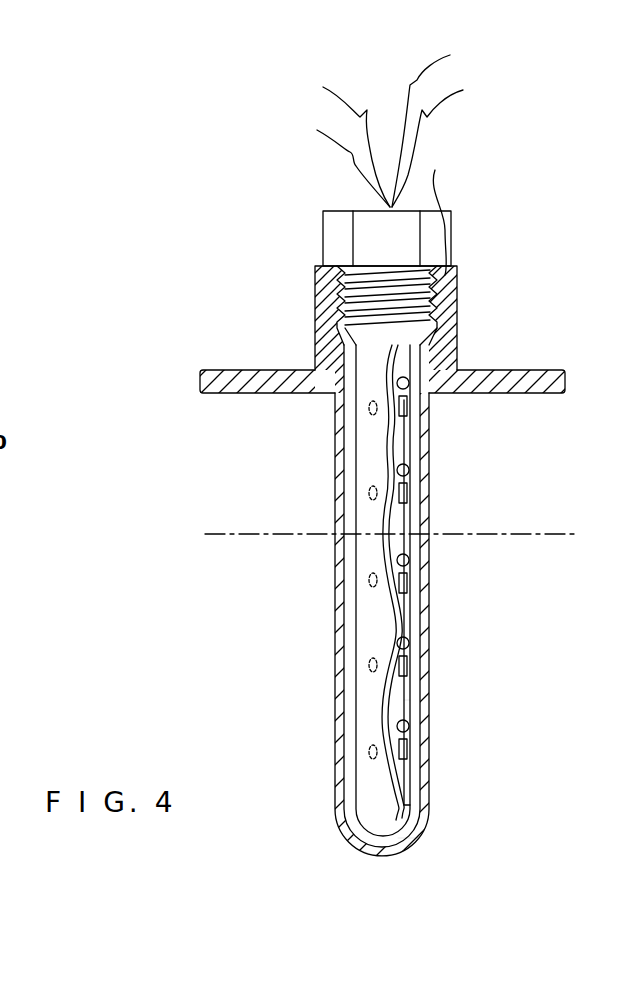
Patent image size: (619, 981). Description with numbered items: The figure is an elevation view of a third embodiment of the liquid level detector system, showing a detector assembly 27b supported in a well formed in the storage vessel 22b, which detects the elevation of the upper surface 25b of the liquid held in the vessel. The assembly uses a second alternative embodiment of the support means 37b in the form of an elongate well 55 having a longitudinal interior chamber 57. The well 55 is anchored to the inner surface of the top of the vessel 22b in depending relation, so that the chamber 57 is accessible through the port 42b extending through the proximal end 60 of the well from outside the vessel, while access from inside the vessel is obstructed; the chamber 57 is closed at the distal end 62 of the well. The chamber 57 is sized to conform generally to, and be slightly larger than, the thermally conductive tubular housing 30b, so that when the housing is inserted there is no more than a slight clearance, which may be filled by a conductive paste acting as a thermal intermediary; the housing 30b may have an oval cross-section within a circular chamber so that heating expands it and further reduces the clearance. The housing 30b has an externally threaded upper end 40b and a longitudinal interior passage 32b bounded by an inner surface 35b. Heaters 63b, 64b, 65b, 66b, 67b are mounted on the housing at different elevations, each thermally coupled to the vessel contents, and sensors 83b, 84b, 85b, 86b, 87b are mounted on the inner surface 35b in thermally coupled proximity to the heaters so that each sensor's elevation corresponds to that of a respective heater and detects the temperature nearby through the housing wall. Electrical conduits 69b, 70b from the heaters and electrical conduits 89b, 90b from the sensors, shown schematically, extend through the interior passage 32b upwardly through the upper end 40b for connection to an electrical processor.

The vessel 22b is at (539, 372).
The upper surface of the fluid 25b is at (538, 534).
The detector assembly 27b is at (342, 705).
The housing 30b is at (418, 733).
The interior passage 32b is at (395, 620).
The inner surface 35b is at (407, 700).
The support means 37b is at (472, 265).
The upper end 40b is at (463, 287).
The port 42b is at (352, 266).
The well 55 is at (332, 825).
The interior chamber 57 is at (398, 838).
The proximal end 60 is at (437, 290).
The distal end 62 is at (394, 858).
The heater 63b is at (368, 412).
The heater 64b is at (368, 495).
The heater 65b is at (368, 582).
The heater 66b is at (368, 665).
The heater 67b is at (368, 755).
The electrical conduit 69b is at (331, 159).
The electrical conduit 70b is at (334, 140).
The sensor 83b is at (425, 398).
The sensor 84b is at (405, 475).
The sensor 85b is at (408, 573).
The sensor 86b is at (405, 640).
The sensor 87b is at (407, 788).
The electrical conduit 89b is at (443, 125).
The electrical conduit 90b is at (450, 143).